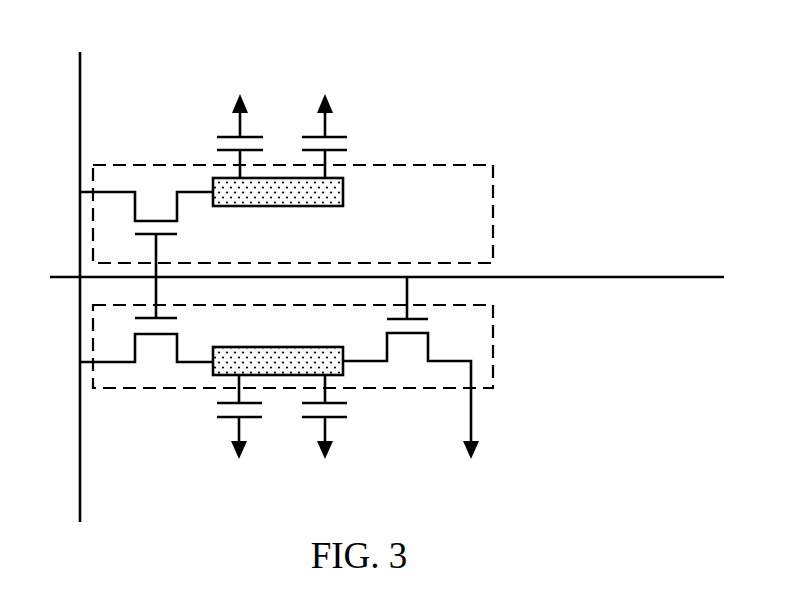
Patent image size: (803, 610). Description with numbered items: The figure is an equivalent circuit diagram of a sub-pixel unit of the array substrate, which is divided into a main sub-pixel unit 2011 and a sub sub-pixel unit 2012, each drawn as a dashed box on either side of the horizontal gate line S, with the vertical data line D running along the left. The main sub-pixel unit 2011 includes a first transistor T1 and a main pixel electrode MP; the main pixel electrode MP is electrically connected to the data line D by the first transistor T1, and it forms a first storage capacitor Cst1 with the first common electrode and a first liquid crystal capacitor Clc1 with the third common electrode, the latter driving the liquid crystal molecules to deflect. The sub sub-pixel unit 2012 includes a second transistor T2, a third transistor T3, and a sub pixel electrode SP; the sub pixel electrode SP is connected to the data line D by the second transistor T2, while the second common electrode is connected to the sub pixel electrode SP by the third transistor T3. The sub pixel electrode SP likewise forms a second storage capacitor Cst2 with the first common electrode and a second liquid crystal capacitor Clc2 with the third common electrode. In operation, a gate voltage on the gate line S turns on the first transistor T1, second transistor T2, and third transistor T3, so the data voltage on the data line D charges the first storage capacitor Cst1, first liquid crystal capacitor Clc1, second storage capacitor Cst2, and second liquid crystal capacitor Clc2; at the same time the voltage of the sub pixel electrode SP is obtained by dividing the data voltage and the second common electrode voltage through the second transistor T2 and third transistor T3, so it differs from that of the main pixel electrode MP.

The main sub-pixel unit 2011 is at (339, 173).
The sub sub-pixel unit 2012 is at (339, 381).
The data line D is at (85, 273).
The gate line S is at (370, 277).
The first transistor T1 is at (146, 223).
The second transistor T2 is at (146, 330).
The third transistor T3 is at (429, 381).
The main pixel electrode MP is at (278, 204).
The sub pixel electrode SP is at (278, 350).
The first liquid crystal capacitor Clc1 is at (218, 124).
The first storage capacitor Cst1 is at (347, 124).
The second liquid crystal capacitor Clc2 is at (218, 430).
The second storage capacitor Cst2 is at (345, 430).